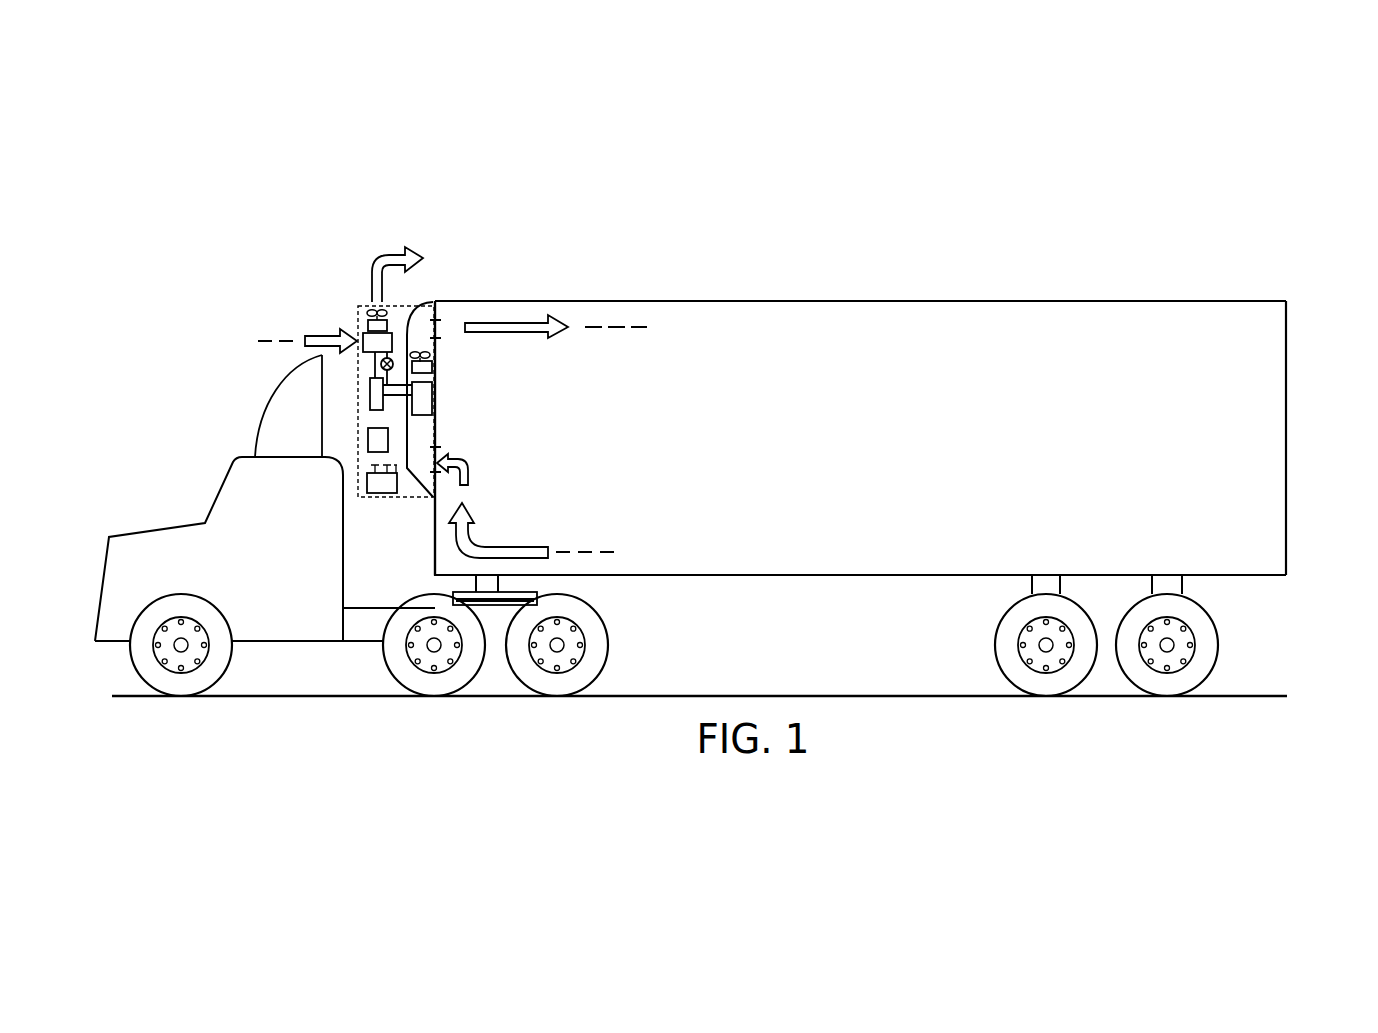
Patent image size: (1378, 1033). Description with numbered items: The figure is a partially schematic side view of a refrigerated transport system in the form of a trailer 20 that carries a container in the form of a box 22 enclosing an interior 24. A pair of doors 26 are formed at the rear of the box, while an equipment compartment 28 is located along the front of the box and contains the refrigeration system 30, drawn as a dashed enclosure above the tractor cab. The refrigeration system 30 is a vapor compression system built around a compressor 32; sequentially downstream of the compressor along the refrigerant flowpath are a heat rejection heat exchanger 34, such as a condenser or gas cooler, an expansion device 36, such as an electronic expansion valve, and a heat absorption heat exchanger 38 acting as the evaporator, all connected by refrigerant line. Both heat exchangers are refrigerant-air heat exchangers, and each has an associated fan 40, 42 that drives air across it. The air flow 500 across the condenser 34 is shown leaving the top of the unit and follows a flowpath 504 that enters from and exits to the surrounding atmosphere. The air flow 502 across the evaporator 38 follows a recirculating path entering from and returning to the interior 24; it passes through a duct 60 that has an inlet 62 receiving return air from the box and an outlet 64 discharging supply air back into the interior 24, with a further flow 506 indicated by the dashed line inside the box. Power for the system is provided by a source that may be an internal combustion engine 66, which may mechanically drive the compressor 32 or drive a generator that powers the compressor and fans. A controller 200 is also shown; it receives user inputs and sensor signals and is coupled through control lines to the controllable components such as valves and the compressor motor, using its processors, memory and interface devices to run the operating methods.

The trailer 20 is at (1042, 262).
The box 22 is at (868, 292).
The interior 24 is at (851, 446).
The doors 26 is at (1300, 460).
The equipment compartment 28 is at (419, 283).
The refrigeration system 30 is at (357, 402).
The compressor 32 is at (378, 410).
The heat rejection heat exchanger 34 is at (374, 343).
The expansion device 36 is at (392, 358).
The heat absorption heat exchanger 38 is at (425, 402).
The fan 40 is at (370, 331).
The fan 42 is at (432, 367).
The duct 60 is at (426, 437).
The inlet 62 is at (440, 470).
The outlet 64 is at (438, 327).
The internal combustion engine 66 is at (372, 443).
The controller 200 is at (376, 494).
The air flow 500 is at (383, 255).
The air flow 502 is at (508, 329).
The flowpath 504 is at (296, 337).
The airflow path 506 is at (618, 327).